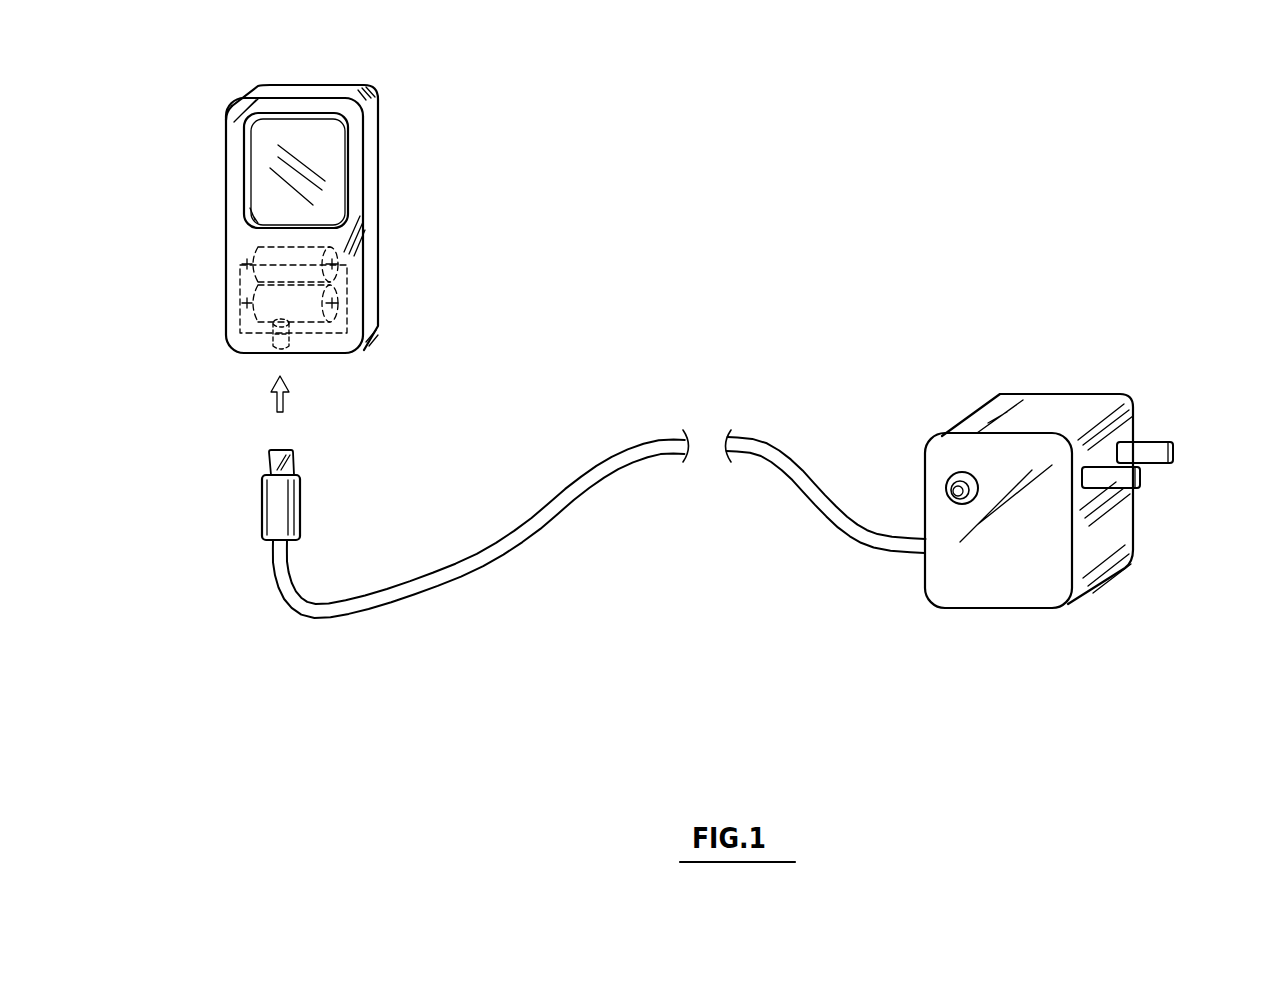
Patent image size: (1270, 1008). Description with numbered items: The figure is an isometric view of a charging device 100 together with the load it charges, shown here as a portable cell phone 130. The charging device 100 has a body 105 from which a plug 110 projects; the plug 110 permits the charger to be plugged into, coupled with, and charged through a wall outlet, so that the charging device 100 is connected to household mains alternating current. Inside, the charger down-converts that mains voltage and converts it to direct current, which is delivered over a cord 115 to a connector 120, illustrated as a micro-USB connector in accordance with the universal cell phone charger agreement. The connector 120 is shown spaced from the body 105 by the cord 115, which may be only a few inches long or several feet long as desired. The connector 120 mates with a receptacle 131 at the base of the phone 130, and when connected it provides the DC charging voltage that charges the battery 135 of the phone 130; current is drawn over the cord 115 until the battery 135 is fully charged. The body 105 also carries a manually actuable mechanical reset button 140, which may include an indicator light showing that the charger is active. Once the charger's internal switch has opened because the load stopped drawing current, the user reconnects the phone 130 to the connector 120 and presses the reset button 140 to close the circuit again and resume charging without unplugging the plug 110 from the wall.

The charging device 100 is at (1043, 340).
The body 105 is at (1040, 552).
The plug 110 is at (1174, 465).
The cord 115 is at (603, 470).
The connector 120 is at (300, 508).
The phone 130 is at (380, 233).
The mating receptacle 131 is at (268, 355).
The battery 135 is at (343, 296).
The reset button 140 is at (946, 490).